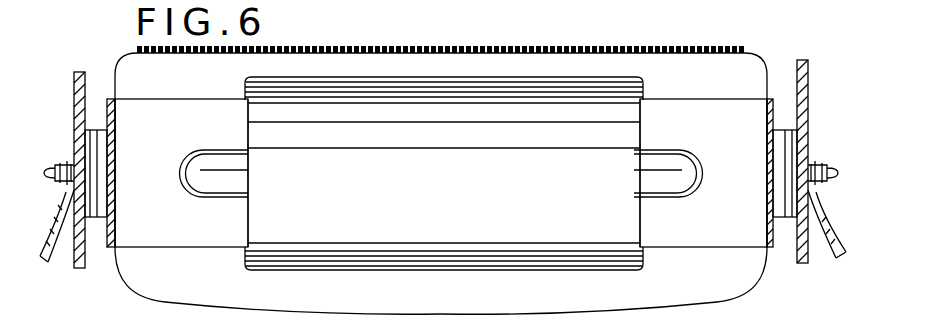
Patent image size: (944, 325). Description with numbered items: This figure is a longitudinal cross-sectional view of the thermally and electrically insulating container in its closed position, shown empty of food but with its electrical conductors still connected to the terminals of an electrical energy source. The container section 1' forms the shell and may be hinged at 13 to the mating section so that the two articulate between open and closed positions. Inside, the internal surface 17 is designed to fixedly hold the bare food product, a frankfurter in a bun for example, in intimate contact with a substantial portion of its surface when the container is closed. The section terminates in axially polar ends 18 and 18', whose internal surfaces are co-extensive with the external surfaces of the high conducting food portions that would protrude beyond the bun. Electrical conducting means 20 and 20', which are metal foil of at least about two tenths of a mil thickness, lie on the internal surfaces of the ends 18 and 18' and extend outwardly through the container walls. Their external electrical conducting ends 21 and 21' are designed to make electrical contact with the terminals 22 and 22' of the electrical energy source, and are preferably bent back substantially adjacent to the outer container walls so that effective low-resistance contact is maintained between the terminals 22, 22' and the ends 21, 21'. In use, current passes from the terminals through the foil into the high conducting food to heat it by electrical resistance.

The container section 1' is at (441, 34).
The hinge 13 is at (670, 48).
The internal surface 17 is at (466, 234).
The axially polar end 18 is at (258, 183).
The axially polar end 18' is at (634, 185).
The electrical conducting means 20 is at (181, 173).
The electrical conducting means 20' is at (700, 173).
The electrical conducting end 21 is at (79, 153).
The electrical conducting end 21' is at (820, 161).
The terminal 22 is at (64, 169).
The terminal 22' is at (823, 170).